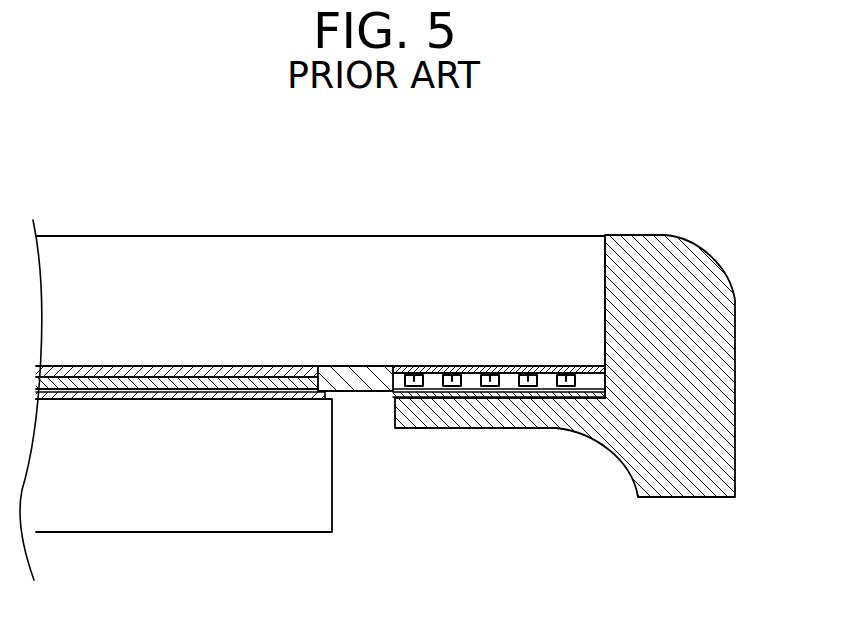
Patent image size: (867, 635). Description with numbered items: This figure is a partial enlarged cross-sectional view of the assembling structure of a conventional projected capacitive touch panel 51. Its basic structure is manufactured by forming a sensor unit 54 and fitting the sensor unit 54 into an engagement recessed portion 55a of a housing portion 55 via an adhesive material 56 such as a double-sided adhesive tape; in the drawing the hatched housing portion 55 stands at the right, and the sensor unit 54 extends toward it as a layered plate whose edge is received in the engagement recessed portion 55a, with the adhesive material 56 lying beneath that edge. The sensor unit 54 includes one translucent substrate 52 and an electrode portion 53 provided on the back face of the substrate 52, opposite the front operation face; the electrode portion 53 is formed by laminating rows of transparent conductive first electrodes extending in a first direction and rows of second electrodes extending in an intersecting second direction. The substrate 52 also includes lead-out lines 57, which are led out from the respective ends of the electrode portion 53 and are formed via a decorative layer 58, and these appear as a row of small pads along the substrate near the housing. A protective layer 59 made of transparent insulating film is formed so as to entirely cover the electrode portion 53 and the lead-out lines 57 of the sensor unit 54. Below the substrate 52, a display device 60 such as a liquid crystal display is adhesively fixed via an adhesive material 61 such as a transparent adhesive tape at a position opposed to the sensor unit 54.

The projected capacitive touch panel 51 is at (675, 307).
The translucent substrate 52 is at (432, 366).
The electrode portion 53 is at (260, 366).
The sensor unit 54 is at (147, 232).
The housing portion 55 is at (737, 356).
The engagement recessed portion 55a is at (603, 322).
The adhesive material 56 is at (597, 400).
The lead-out lines 57 is at (446, 388).
The decorative layer 58 is at (512, 370).
The protective layer 59 is at (355, 380).
The display device 60 is at (333, 481).
The adhesive material 61 is at (185, 394).